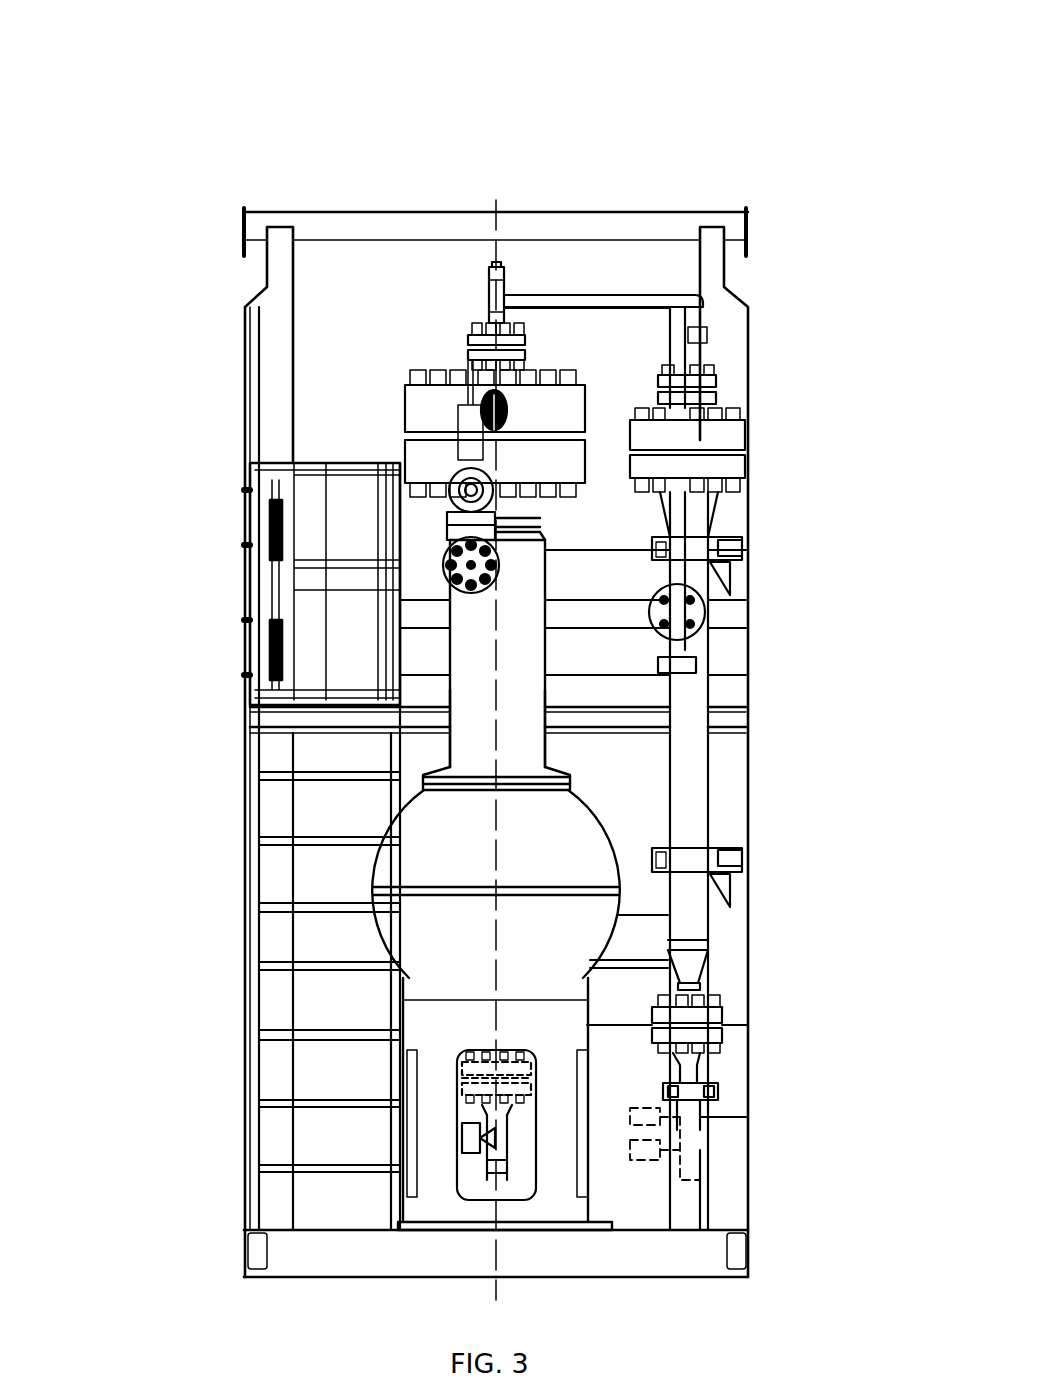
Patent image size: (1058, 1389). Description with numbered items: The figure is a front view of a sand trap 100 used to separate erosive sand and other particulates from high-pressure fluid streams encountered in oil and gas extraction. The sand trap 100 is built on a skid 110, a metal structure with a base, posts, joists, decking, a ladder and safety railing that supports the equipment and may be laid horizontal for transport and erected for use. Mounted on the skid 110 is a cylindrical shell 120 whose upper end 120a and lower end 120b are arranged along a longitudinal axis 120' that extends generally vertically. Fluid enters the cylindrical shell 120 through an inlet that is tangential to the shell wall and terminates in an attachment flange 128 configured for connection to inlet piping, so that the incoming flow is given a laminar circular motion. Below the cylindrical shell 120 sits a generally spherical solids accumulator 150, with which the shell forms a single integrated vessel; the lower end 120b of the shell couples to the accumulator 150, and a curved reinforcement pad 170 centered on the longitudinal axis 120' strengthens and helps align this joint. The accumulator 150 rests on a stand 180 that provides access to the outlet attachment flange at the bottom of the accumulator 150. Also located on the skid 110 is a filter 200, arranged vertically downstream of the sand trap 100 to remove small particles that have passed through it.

The sand trap 100 is at (432, 170).
The skid 110 is at (232, 318).
The cylindrical shell 120 is at (502, 717).
The upper end of the cylindrical shell 120a is at (590, 378).
The lower end of the cylindrical shell 120b is at (550, 760).
The longitudinal axis 120' is at (288, 847).
The attachment flange 128 is at (498, 557).
The reinforcement pad 170 is at (570, 782).
The solids accumulator 150 is at (585, 935).
The filter 200 is at (720, 930).
The stand 180 is at (560, 1180).